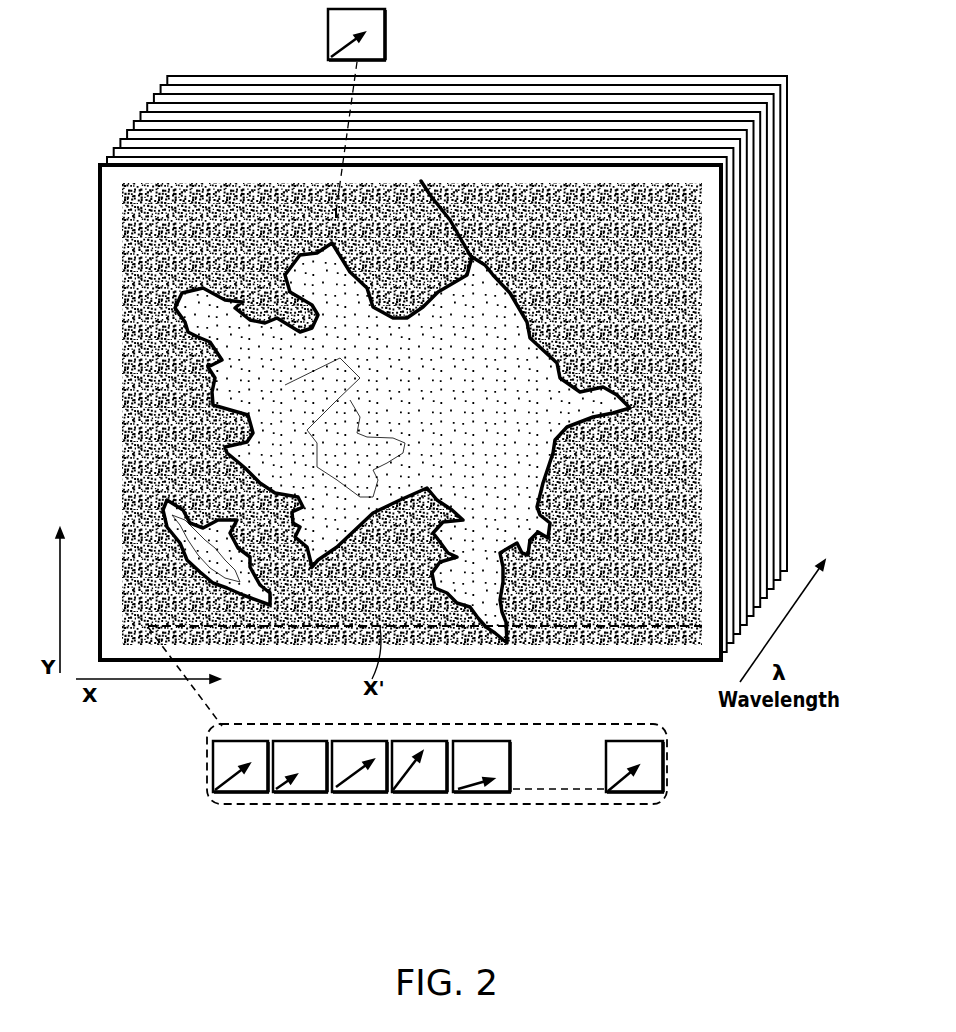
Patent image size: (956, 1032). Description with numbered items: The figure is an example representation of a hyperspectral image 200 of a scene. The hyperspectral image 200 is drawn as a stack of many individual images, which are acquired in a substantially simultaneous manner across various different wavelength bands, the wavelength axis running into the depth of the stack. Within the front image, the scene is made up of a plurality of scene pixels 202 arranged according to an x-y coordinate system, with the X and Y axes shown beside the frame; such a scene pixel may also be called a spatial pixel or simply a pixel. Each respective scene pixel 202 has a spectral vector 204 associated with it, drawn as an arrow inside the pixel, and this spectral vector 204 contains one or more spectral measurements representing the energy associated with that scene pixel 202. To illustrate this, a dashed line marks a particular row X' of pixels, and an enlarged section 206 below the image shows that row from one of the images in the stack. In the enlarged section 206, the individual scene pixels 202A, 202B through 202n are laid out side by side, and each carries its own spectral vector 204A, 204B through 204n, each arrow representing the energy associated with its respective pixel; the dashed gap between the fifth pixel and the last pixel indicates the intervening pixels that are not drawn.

The hyperspectral image 200 is at (122, 256).
The scene pixel 202 is at (386, 34).
The spectral vector 204 is at (338, 52).
The scene pixel 202A is at (228, 796).
The spectral vector 204A is at (234, 782).
The scene pixel 202B is at (316, 796).
The spectral vector 204B is at (280, 794).
The enlarged section 206 is at (470, 796).
The scene pixel 202n is at (666, 766).
The spectral vector 204n is at (610, 794).